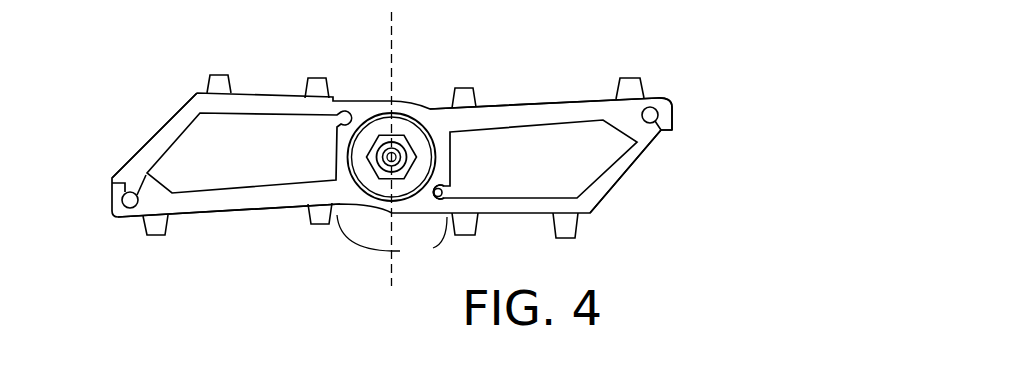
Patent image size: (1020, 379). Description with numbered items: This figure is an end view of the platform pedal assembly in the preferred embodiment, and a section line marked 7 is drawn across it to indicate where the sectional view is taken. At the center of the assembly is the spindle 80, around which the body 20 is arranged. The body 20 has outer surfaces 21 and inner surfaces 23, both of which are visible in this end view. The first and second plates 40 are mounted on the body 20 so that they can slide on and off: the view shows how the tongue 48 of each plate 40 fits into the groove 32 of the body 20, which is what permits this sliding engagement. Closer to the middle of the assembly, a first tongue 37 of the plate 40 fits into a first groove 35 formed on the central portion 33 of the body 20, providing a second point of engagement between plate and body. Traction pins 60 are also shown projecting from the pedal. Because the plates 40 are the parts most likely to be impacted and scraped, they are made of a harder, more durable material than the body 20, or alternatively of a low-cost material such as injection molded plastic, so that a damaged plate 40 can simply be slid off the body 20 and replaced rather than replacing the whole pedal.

The section line 7- 7 is at (364, 22).
The body 20 is at (522, 115).
The outer surfaces 21 is at (552, 100).
The inner surfaces 23 is at (218, 188).
The groove 32 is at (655, 100).
The central portion 33 is at (392, 240).
The first groove 35 is at (443, 193).
The first tongue 37 is at (441, 187).
The first and second plates 40 is at (174, 140).
The tongue 48 is at (643, 113).
The traction pins 60 is at (147, 228).
The spindle 80 is at (418, 107).